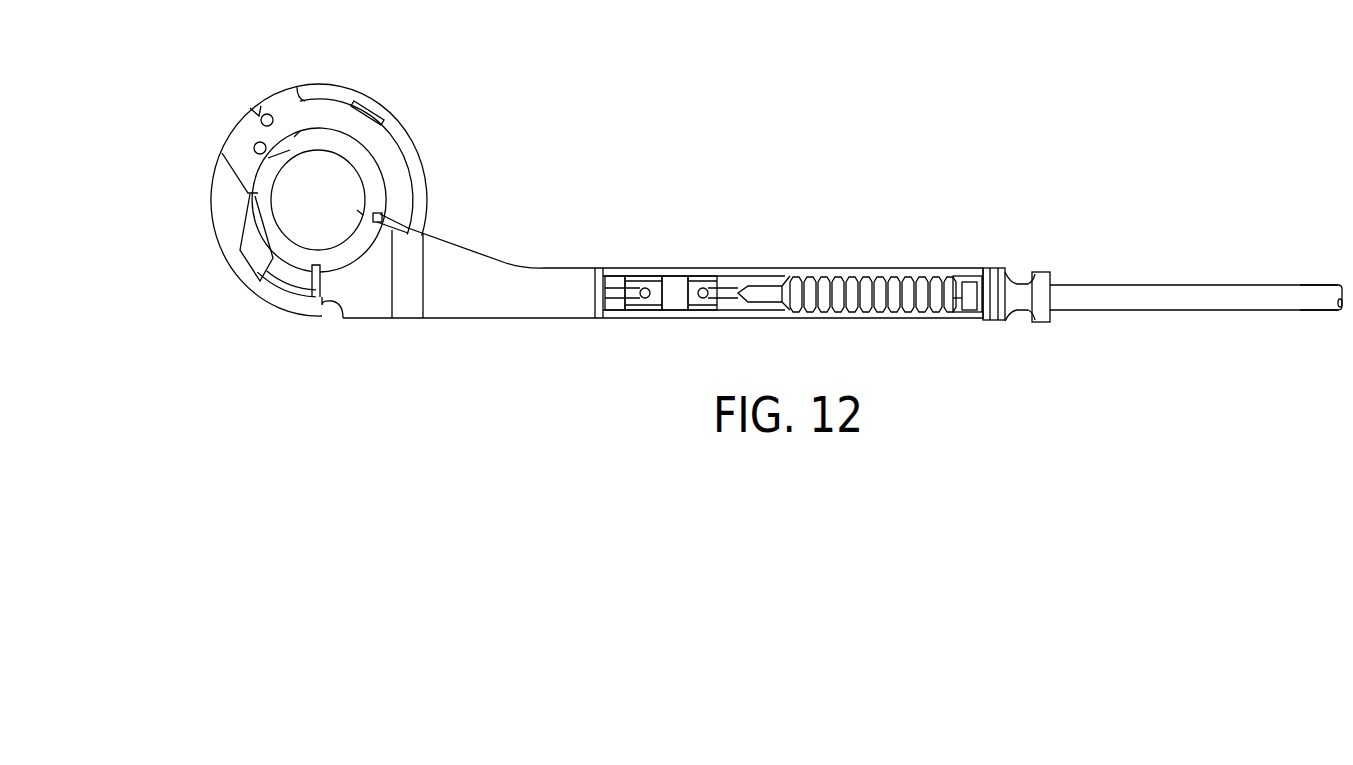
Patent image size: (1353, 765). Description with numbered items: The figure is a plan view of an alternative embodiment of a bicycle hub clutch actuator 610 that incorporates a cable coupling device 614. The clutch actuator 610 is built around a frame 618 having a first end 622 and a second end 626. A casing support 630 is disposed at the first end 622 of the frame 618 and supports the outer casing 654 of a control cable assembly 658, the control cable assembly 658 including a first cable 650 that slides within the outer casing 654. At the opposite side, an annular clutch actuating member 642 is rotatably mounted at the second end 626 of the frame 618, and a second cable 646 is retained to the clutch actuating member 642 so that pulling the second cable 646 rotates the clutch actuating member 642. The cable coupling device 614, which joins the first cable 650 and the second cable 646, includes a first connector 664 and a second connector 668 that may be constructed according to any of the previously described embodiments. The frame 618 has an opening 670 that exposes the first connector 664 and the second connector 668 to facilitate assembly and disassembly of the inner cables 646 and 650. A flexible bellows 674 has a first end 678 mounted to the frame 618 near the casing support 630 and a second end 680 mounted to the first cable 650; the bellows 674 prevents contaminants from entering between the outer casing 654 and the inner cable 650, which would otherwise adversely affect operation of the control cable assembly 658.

The bicycle hub clutch actuator 610 is at (233, 76).
The cable coupling device 614 is at (808, 236).
The frame 618 is at (447, 243).
The first end 622 is at (980, 320).
The second end 626 is at (372, 320).
The casing support 630 is at (1013, 270).
The annular clutch actuating member 642 is at (243, 233).
The second cable 646 is at (607, 287).
The first cable 650 is at (732, 287).
The outer casing 654 is at (1130, 290).
The control cable assembly 658 is at (1228, 345).
The first connector 664 is at (702, 278).
The second connector 668 is at (645, 308).
The opening 670 is at (735, 310).
The flexible bellows 674 is at (877, 275).
The first end 678 is at (972, 288).
The second end 680 is at (770, 298).